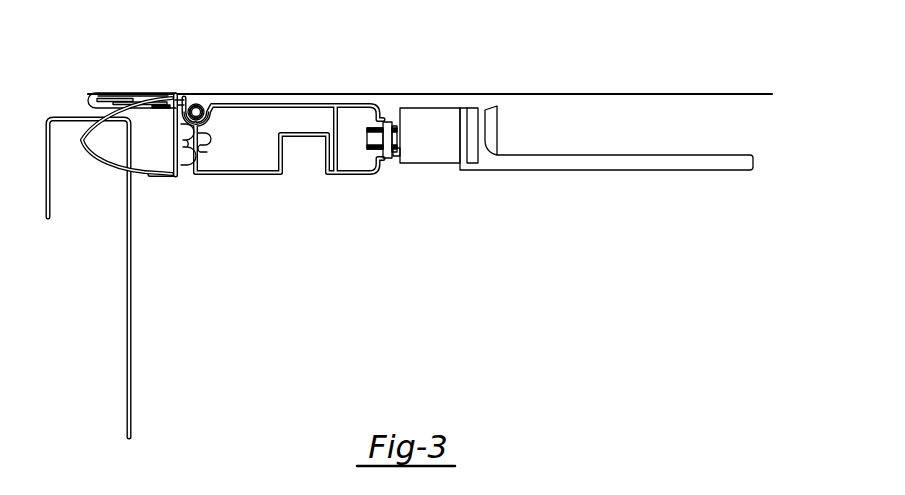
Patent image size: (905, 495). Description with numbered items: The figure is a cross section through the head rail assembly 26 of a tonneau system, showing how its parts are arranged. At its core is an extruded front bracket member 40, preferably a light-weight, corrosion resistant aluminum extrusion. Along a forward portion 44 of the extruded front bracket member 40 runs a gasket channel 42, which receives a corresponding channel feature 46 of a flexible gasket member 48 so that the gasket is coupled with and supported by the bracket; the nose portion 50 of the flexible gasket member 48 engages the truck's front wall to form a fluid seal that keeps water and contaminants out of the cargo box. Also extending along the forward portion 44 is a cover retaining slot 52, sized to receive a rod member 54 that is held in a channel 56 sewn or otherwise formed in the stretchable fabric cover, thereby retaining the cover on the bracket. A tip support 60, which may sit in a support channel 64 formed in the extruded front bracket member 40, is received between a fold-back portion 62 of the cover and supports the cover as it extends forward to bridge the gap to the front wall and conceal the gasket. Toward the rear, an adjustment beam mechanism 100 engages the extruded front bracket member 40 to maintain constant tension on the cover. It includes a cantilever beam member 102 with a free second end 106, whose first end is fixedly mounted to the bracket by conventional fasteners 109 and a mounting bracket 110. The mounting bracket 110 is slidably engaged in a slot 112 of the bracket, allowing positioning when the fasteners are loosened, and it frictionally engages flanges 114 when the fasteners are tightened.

The head rail assembly 26 is at (267, 80).
The extruded front bracket member 40 is at (248, 177).
The gasket channel 42 is at (197, 154).
The forward portion 44 is at (184, 176).
The channel feature 46 is at (204, 144).
The flexible gasket member 48 is at (157, 176).
The nose portion 50 is at (84, 138).
The cover retaining slot 52 is at (207, 102).
The rod member 54 is at (197, 104).
The channel 56 is at (180, 106).
The tip support 60 is at (122, 94).
The fold-back portion 62 is at (95, 92).
The support channel 64 is at (148, 96).
The adjustment beam mechanism 100 is at (443, 98).
The cantilever beam member 102 is at (442, 150).
The second end 106 is at (476, 137).
The fasteners 109 is at (371, 160).
The mounting bracket 110 is at (386, 120).
The slot 112 is at (393, 158).
The flanges 114 is at (404, 155).